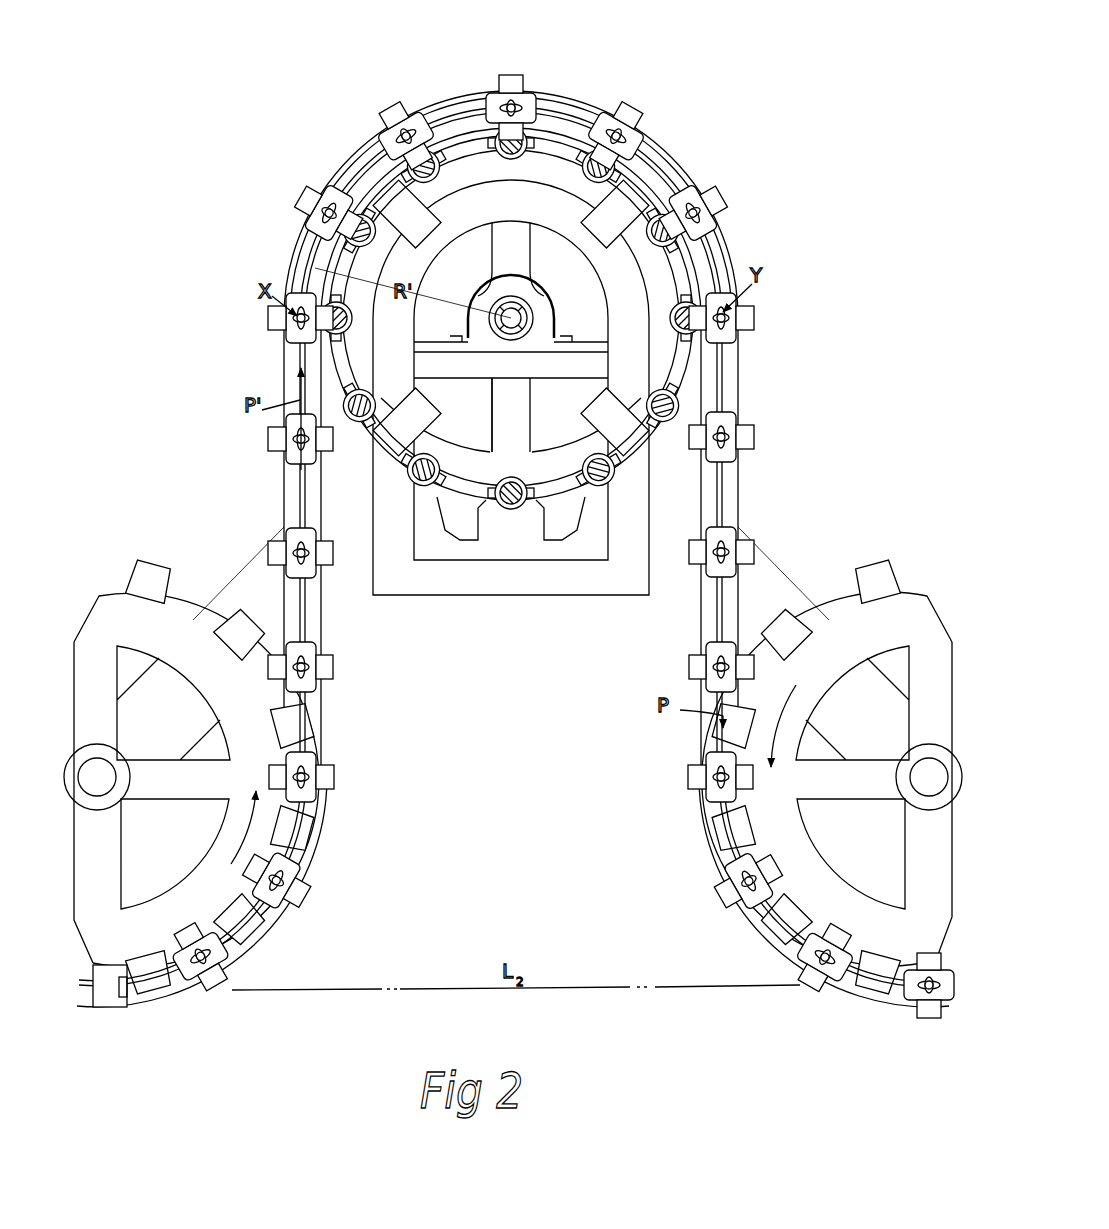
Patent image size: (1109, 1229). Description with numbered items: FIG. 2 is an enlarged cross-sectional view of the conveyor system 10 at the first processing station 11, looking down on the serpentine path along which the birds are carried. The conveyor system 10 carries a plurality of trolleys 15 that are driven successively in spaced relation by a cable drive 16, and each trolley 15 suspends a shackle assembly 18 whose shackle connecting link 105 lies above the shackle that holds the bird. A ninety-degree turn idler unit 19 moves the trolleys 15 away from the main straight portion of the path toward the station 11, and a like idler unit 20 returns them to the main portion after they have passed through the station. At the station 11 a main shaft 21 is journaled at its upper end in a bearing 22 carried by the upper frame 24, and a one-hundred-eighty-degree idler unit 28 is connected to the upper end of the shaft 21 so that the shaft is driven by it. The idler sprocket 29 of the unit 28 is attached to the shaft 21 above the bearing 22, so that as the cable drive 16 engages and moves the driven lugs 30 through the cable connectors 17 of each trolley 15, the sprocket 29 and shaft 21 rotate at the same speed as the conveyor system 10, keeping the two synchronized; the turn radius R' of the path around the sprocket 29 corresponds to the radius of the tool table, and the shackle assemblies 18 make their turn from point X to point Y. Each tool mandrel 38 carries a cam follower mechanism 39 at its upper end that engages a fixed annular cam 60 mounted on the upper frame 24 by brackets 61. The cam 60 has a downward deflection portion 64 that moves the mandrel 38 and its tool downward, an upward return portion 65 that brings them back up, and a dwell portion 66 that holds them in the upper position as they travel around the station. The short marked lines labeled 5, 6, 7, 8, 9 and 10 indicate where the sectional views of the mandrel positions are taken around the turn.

The section line 5- 5 is at (265, 461).
The section line 6- 6 is at (228, 288).
The section line 7- 7 is at (512, 68).
The section line 8- 8 is at (773, 163).
The section line 9- 9 is at (760, 315).
The conveyor system 10 is at (800, 462).
The first processing station 11 is at (704, 129).
The trolley 15 is at (633, 113).
The cable drive 16 is at (598, 112).
The cable connector 17 is at (426, 116).
The shackle assembly 18 is at (506, 101).
The 90° turn idler unit 19 is at (170, 570).
The idler unit 20 is at (884, 570).
The main shaft 21 is at (515, 316).
The bearing 22 is at (548, 318).
The upper frame 24 is at (546, 375).
The 180° idler unit 28 is at (532, 516).
The idler sprocket 29 is at (531, 430).
The driven lug 30 is at (358, 161).
The tool mandrel 38 is at (516, 153).
The cam follower mechanism 39 is at (583, 146).
The annular cam 60 is at (668, 265).
The bracket 61 is at (436, 229).
The downward deflection portion 64 is at (632, 184).
The upward return portion 65 is at (460, 148).
The dwell portion 66 is at (473, 501).
The shackle connecting link 105 is at (516, 107).